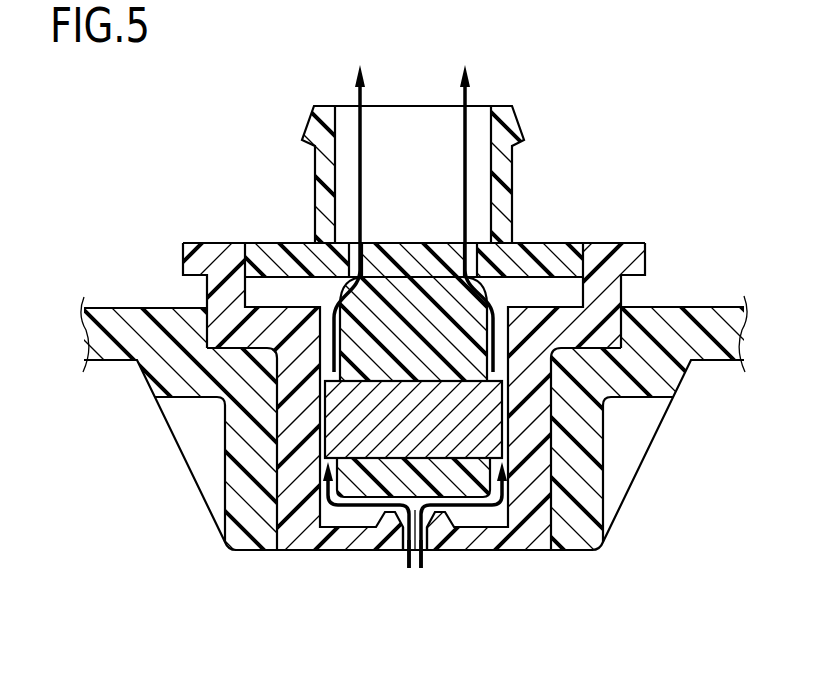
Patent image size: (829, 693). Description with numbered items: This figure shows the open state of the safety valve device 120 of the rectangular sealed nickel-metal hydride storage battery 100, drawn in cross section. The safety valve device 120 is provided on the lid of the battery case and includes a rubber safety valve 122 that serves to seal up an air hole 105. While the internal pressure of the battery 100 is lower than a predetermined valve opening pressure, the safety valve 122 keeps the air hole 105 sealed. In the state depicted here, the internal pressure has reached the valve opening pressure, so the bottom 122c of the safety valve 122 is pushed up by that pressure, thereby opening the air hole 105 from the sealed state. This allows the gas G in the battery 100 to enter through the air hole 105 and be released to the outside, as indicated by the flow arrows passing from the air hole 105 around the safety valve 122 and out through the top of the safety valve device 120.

The nickel-metal hydride storage battery 100 is at (611, 152).
The safety valve device 120 is at (283, 246).
The safety valve 122 is at (432, 349).
The bottom 122c is at (364, 497).
The air hole 105 is at (423, 552).
The gas G is at (404, 563).